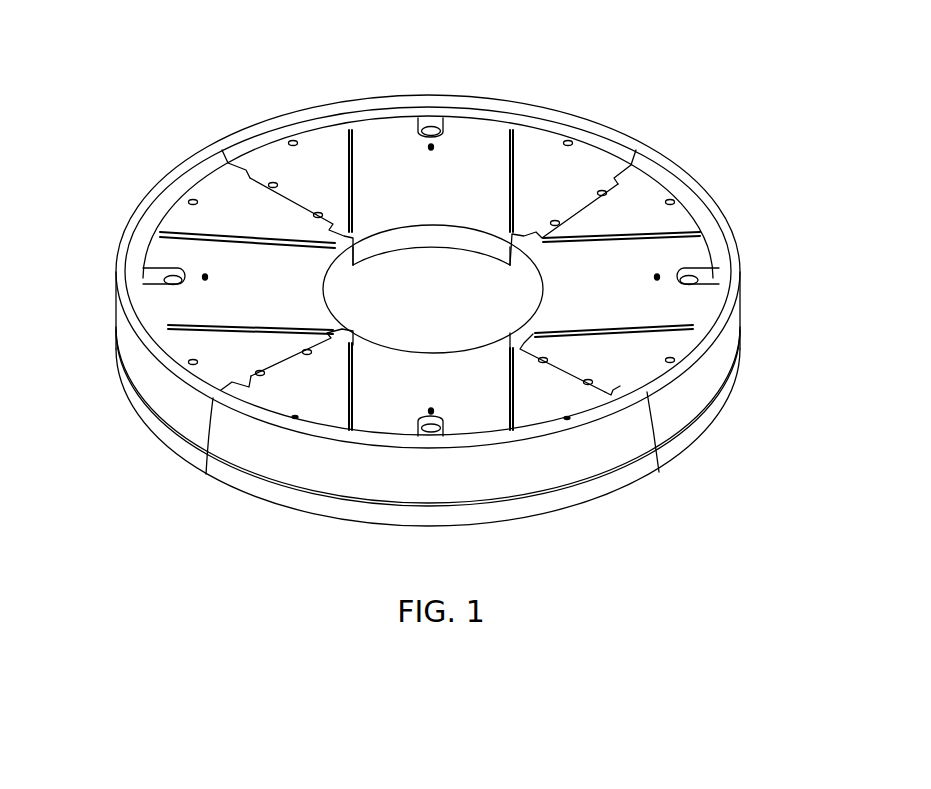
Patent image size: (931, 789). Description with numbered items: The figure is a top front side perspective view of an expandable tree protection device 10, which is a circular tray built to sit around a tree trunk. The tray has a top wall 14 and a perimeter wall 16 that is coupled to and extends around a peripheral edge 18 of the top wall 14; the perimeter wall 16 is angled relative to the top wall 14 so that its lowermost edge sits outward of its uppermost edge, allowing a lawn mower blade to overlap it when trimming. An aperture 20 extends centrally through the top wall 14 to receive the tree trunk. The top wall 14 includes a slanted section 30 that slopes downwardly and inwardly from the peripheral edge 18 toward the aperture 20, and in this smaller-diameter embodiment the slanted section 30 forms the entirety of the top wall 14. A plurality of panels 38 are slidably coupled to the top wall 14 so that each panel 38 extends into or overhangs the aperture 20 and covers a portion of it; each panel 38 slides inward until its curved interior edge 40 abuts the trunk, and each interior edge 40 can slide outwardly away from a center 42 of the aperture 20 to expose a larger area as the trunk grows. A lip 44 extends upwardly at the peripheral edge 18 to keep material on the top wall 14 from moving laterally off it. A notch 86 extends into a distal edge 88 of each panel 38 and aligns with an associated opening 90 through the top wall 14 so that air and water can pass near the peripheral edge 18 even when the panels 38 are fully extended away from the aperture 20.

The expandable tree protection device 10 is at (661, 112).
The top wall 14 is at (650, 198).
The perimeter wall 16 is at (710, 377).
The peripheral edge 18 is at (700, 215).
The aperture 20 is at (409, 286).
The slanted section 30 is at (537, 170).
The panel 38 is at (487, 132).
The curved interior edge 40 is at (435, 226).
The center 42 is at (424, 301).
The lip 44 is at (353, 108).
The notch 86 is at (443, 114).
The distal edge 88 is at (407, 115).
The opening 90 is at (433, 127).